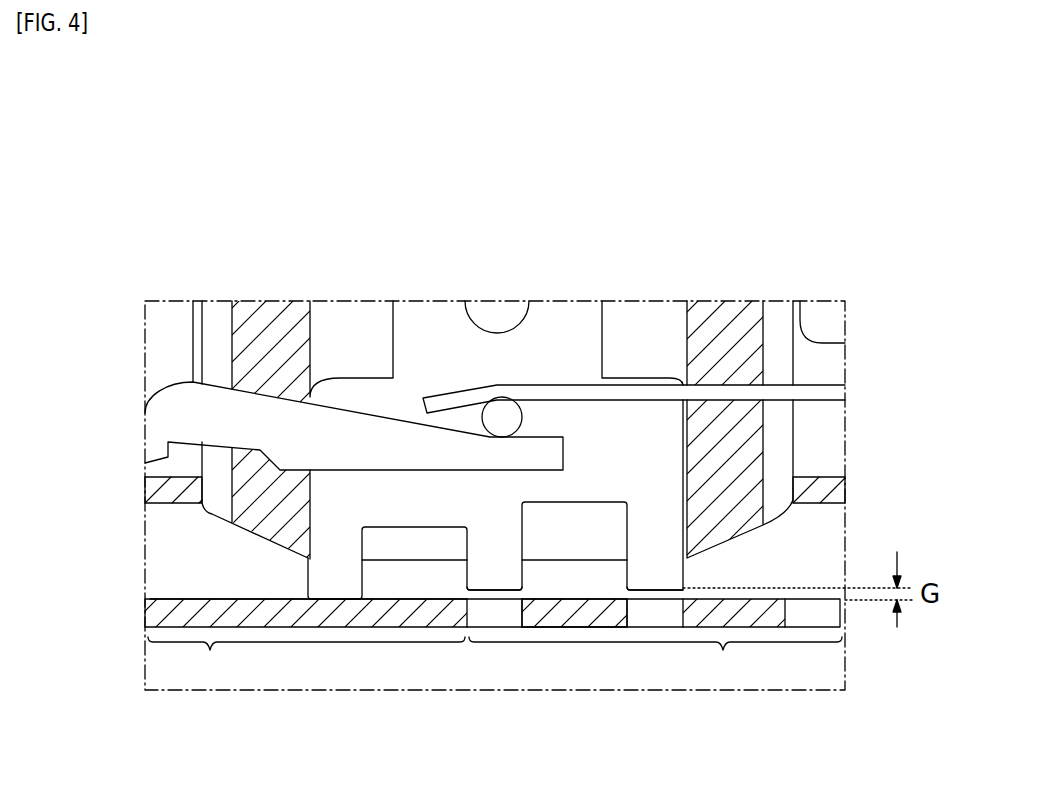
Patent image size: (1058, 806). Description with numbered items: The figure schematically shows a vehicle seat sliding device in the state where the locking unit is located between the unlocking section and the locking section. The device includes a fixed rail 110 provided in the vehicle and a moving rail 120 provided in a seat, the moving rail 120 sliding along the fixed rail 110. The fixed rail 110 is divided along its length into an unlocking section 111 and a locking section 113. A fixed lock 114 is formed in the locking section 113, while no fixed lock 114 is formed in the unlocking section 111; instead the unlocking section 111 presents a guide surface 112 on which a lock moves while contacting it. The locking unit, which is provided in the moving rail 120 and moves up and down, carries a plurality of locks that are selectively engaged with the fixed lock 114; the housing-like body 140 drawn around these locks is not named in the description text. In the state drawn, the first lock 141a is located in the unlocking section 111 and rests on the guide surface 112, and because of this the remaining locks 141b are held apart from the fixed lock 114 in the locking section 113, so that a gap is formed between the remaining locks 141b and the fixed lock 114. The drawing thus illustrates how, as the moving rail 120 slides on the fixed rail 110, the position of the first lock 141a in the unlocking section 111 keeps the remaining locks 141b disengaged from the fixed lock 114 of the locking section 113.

The housing body 140 is at (565, 332).
The moving rail 120 is at (165, 483).
The fixed rail 110 is at (300, 612).
The unlocking section 111 is at (306, 661).
The guide surface 112 is at (248, 596).
The locking section 113 is at (655, 661).
The fixed lock 114 is at (598, 618).
The first lock 141a is at (333, 585).
The remaining locks 141b is at (492, 572).